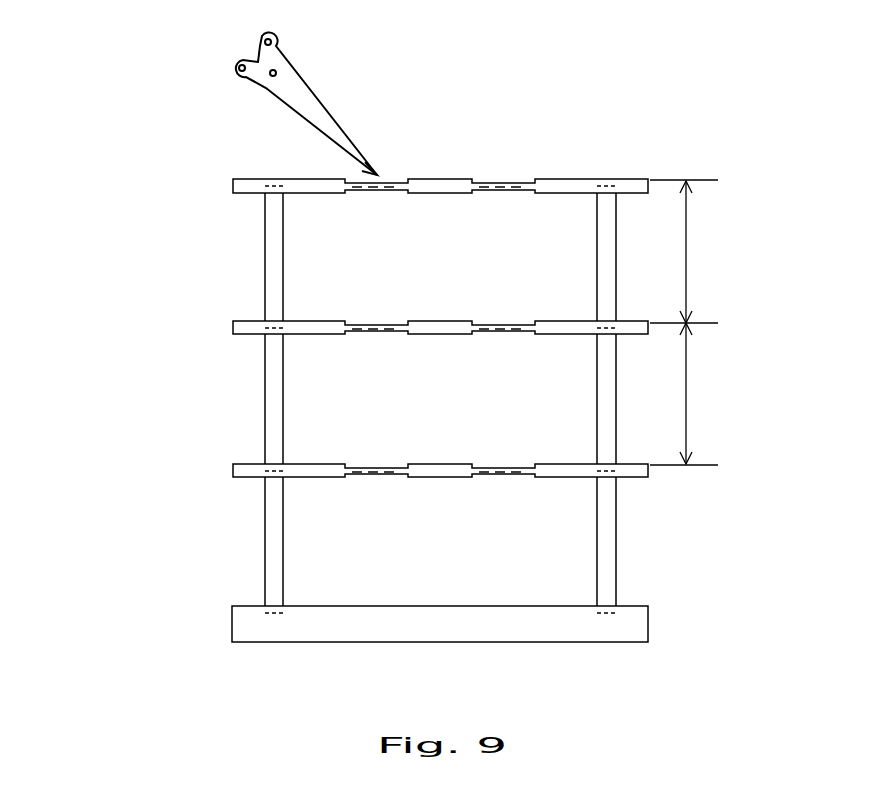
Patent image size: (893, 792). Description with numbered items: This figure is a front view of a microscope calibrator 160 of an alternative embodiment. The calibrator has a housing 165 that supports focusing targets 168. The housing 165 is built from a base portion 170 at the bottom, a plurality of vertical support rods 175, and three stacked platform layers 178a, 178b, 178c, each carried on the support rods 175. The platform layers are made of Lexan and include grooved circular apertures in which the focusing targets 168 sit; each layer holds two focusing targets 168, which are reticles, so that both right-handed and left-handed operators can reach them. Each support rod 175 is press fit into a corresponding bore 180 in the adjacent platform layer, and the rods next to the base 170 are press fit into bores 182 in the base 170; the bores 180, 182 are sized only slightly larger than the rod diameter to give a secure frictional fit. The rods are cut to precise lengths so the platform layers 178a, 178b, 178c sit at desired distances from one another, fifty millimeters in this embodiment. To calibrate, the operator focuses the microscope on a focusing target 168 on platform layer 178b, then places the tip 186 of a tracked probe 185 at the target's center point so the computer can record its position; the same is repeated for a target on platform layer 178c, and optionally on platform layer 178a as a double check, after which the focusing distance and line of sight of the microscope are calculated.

The microscope calibrator 160 is at (731, 238).
The housing 165 is at (150, 381).
The focusing targets 168 is at (394, 180).
The base portion 170 is at (641, 622).
The support rods 175 is at (277, 270).
The platform layer 178a is at (232, 184).
The platform layer 178b is at (232, 328).
The platform layer 178c is at (232, 471).
The bore 180 is at (270, 190).
The bores 182 is at (266, 607).
The tracked probe 185 is at (296, 84).
The tip 186 is at (362, 170).